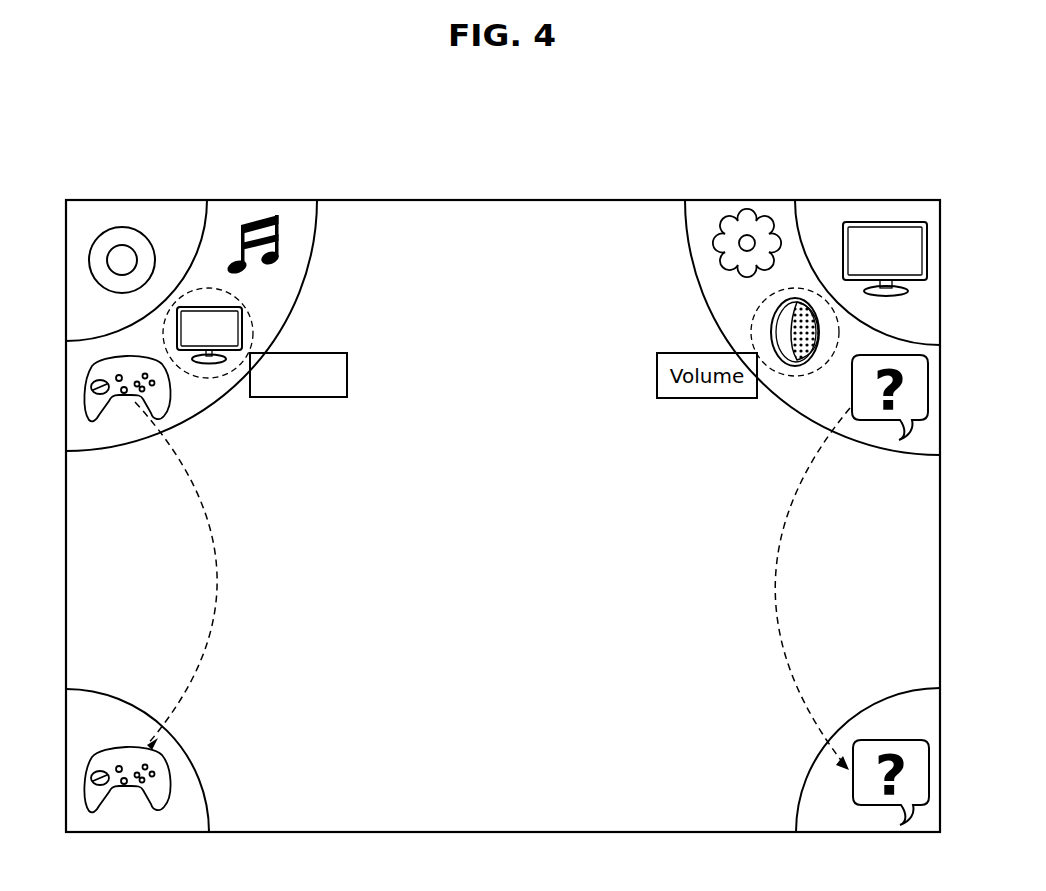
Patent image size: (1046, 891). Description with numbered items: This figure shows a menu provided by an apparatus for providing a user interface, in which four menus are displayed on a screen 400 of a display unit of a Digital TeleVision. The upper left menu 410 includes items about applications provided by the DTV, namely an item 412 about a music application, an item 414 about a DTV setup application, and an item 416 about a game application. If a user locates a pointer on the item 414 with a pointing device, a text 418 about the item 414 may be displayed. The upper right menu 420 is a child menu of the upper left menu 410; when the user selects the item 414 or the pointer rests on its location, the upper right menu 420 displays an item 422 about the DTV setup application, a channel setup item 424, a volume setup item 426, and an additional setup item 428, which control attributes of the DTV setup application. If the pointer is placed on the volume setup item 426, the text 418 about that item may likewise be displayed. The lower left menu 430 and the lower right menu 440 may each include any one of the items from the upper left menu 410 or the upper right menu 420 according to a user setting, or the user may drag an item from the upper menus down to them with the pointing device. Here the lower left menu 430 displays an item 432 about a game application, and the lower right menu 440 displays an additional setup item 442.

The screen 400 is at (502, 198).
The upper left menu 410 is at (153, 212).
The item about a music application 412 is at (262, 214).
The item about a DTV setup application 414 is at (210, 378).
The item about a game application 416 is at (92, 412).
The text 418 is at (300, 398).
The upper right menu 420 is at (829, 212).
The item about the DTV setup application 422 is at (892, 245).
The channel setup item 424 is at (726, 264).
The volume setup item 426 is at (797, 380).
The additional setup item 428 is at (886, 440).
The lower left menu 430 is at (184, 818).
The item about a game application 432 is at (120, 800).
The lower right menu 440 is at (823, 818).
The additional setup item 442 is at (875, 798).